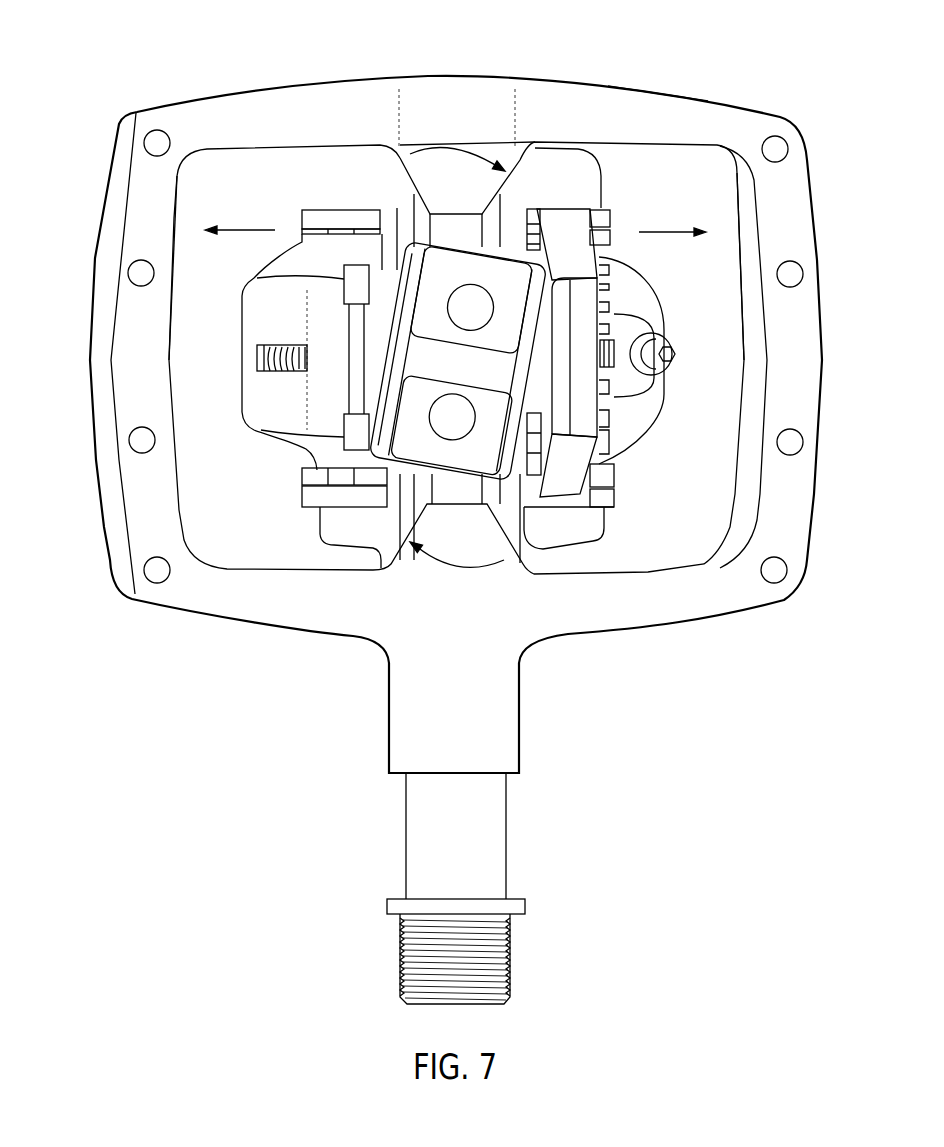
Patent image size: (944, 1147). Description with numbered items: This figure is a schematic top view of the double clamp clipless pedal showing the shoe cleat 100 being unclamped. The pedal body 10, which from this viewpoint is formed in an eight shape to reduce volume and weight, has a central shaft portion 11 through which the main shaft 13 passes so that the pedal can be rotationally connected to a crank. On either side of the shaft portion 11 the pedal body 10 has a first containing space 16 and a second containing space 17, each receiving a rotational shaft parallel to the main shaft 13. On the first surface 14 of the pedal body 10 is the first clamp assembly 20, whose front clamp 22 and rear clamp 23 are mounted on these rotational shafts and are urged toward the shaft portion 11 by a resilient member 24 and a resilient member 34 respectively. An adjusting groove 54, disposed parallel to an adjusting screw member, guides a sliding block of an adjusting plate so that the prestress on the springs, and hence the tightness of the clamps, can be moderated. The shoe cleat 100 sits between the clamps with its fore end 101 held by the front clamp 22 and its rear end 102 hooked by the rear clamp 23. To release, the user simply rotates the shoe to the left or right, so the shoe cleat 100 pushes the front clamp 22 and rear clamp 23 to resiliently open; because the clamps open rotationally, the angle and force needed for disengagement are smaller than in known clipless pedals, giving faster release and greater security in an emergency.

The pedal body 10 is at (651, 82).
The shaft portion 11 is at (455, 84).
The main shaft 13 is at (499, 829).
The first surface 14 is at (772, 532).
The first containing space 16 is at (745, 358).
The second containing space 17 is at (166, 253).
The first clamp assembly 20 is at (292, 439).
The front clamp 22 is at (579, 288).
The rear clamp 23 is at (252, 399).
The resilient member 24 is at (592, 212).
The resilient member 34 is at (301, 213).
The adjusting groove 54 is at (243, 346).
The shoe cleat 100 is at (421, 451).
The fore end 101 is at (537, 376).
The rear end 102 is at (372, 334).